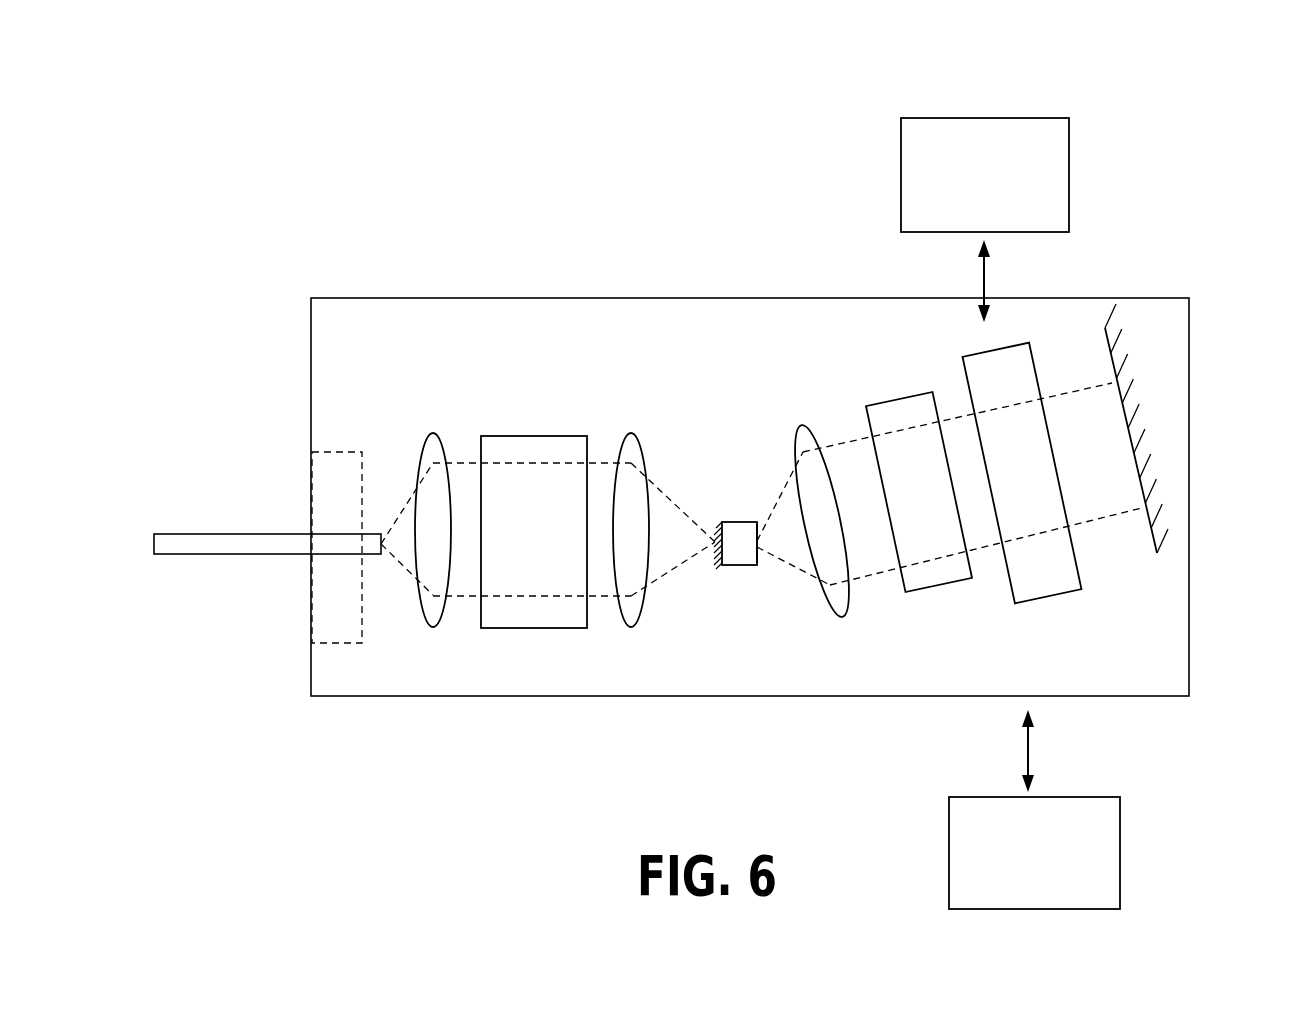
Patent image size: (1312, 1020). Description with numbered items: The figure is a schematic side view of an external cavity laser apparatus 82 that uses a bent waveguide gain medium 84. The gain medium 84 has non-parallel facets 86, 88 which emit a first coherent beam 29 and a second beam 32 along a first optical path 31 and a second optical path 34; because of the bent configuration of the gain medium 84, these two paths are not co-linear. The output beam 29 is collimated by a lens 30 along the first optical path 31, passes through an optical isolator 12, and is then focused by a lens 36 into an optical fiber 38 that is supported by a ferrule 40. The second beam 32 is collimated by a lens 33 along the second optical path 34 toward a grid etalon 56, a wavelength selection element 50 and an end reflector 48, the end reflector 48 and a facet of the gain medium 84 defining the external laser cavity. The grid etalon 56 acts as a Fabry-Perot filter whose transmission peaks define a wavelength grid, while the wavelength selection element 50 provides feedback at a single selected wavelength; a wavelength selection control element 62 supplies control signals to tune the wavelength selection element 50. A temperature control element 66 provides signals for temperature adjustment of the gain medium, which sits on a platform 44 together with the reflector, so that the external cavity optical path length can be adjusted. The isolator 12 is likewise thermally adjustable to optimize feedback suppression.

The external cavity laser apparatus 82 is at (492, 170).
The wavelength selection control element 62 is at (1070, 162).
The temperature control element 66 is at (1120, 843).
The platform 44 is at (1172, 609).
The optical fiber 38 is at (218, 542).
The ferrule 40 is at (330, 465).
The lens 36 is at (433, 435).
The optical isolator 12 is at (517, 452).
The lens 30 is at (630, 448).
The first optical path 31 is at (465, 585).
The first coherent beam 29 is at (600, 587).
The bent waveguide gain medium 84 is at (747, 558).
The facet 86 is at (712, 558).
The facet 88 is at (758, 548).
The lens 33 is at (797, 433).
The second beam 32 is at (857, 447).
The second optical path 34 is at (1100, 513).
The grid etalon 56 is at (930, 585).
The wavelength selection element 50 is at (1005, 358).
The end reflector 48 is at (1108, 330).